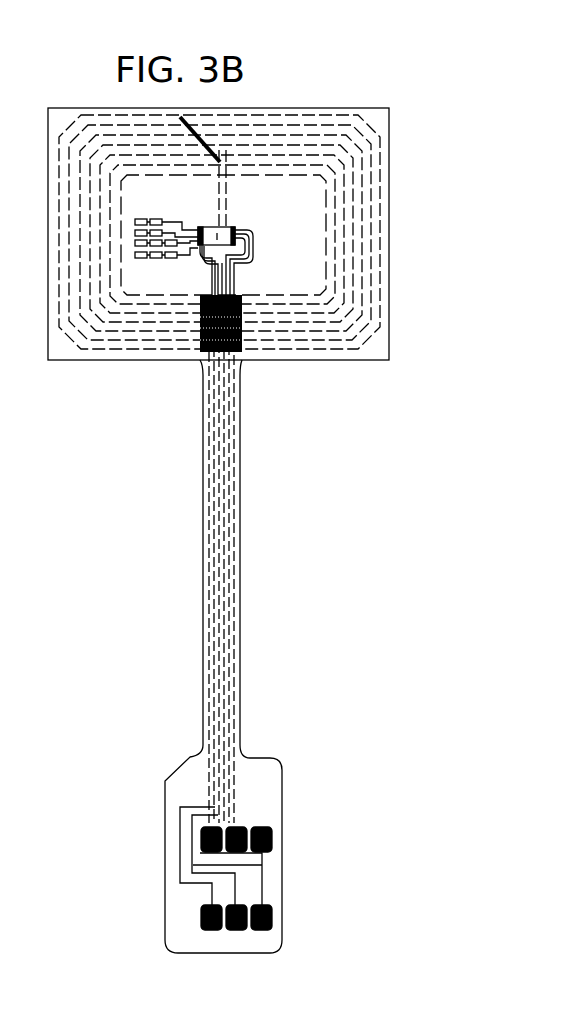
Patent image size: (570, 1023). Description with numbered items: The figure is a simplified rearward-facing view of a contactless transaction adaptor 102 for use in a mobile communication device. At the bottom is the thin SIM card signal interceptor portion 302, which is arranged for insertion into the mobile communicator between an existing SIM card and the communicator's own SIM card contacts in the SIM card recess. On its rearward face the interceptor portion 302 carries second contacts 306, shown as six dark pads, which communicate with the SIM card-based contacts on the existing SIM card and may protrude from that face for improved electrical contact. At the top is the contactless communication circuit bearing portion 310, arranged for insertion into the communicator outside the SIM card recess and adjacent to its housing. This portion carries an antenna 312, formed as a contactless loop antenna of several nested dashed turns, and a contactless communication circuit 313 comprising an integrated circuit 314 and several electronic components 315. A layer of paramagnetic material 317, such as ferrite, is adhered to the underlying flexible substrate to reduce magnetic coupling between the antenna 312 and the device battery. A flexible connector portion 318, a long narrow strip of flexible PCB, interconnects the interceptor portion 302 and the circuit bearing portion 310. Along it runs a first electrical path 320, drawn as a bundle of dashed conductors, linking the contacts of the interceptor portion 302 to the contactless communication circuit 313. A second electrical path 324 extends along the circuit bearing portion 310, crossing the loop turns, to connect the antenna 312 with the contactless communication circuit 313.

The contactless transaction adaptor 102 is at (105, 462).
The thin SIM card signal interceptor portion 302 is at (150, 863).
The second contacts 306 is at (272, 852).
The contactless communication circuit bearing portion 310 is at (327, 92).
The antenna 312 is at (82, 128).
The contactless communication circuit 313 is at (217, 212).
The integrated circuit 314 is at (243, 263).
The electronic components 315 is at (202, 262).
The layer of paramagnetic material 317 is at (48, 180).
The flexible connector portion 318 is at (258, 583).
The first electrical path 320 is at (220, 500).
The second electrical path 324 is at (226, 190).